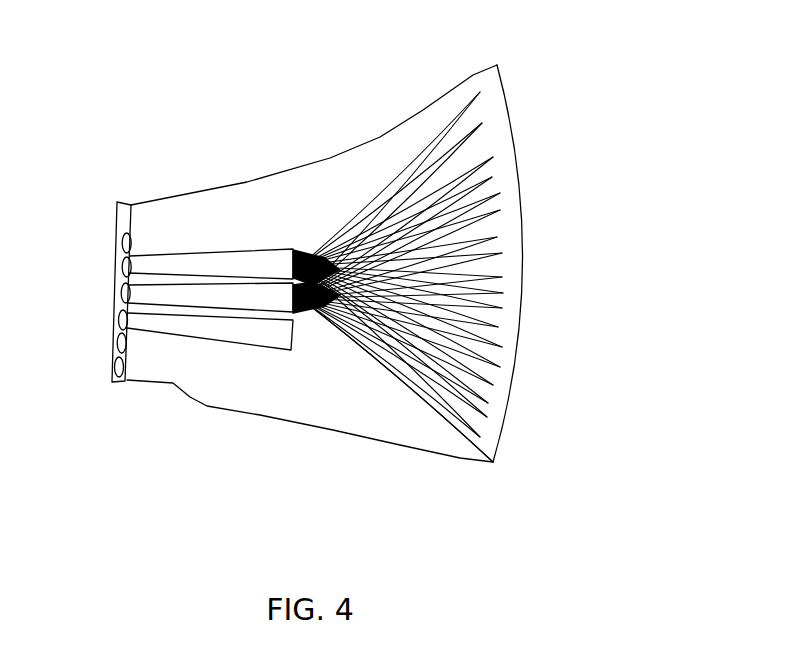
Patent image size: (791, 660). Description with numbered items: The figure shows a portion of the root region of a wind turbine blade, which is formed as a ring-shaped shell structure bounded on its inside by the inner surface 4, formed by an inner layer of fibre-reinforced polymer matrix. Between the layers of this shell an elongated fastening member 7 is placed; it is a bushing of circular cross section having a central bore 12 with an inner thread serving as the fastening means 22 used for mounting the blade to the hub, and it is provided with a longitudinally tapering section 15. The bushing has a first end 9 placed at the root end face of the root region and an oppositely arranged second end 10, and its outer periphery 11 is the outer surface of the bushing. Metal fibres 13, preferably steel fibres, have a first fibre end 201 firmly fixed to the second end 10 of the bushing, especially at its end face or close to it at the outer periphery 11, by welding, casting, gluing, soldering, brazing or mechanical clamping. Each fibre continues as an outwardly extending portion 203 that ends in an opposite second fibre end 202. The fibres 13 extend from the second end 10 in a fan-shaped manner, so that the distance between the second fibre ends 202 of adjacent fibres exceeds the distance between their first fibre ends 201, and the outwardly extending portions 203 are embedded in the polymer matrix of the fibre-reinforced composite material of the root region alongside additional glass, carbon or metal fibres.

The inner surface 4 is at (135, 372).
The elongated fastening member 7 is at (193, 257).
The first end 9 is at (122, 257).
The second end 10 is at (297, 257).
The outer periphery 11 is at (207, 350).
The central bore 12 is at (119, 296).
The metal fibres 13 is at (380, 317).
The longitudinally tapering section 15 is at (222, 257).
The fastening means 22 is at (120, 320).
The first fibre end 201 is at (295, 262).
The second fibre end 202 is at (483, 94).
The outwardly extending portion 203 is at (435, 136).